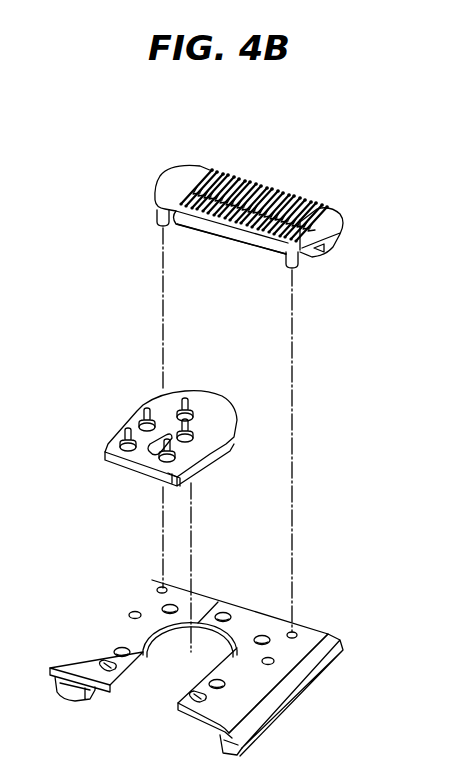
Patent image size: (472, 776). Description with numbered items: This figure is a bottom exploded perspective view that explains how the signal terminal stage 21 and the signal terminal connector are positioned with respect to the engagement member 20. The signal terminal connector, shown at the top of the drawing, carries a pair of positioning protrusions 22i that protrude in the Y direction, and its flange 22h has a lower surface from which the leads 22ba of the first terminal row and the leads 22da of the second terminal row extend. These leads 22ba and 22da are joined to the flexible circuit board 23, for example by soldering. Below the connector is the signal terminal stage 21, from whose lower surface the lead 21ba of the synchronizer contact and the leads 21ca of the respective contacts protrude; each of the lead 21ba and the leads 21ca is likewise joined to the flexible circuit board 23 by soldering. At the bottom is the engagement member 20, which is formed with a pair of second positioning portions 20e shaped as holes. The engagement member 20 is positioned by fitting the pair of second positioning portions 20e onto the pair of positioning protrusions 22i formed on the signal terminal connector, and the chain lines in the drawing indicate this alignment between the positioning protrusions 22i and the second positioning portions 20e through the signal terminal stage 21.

The flexible circuit board 23 is at (166, 164).
The leads of the first terminal row 22ba is at (333, 204).
The leads of the second terminal row 22da is at (286, 258).
The positioning protrusions 22i is at (157, 222).
The flange 22h is at (330, 223).
The signal terminal stage 21 is at (130, 397).
The lead of the synchronizer contact 21ba is at (188, 401).
The leads of the contacts 21ca is at (160, 448).
The engagement member 20 is at (93, 590).
The second positioning portions 20e is at (160, 586).